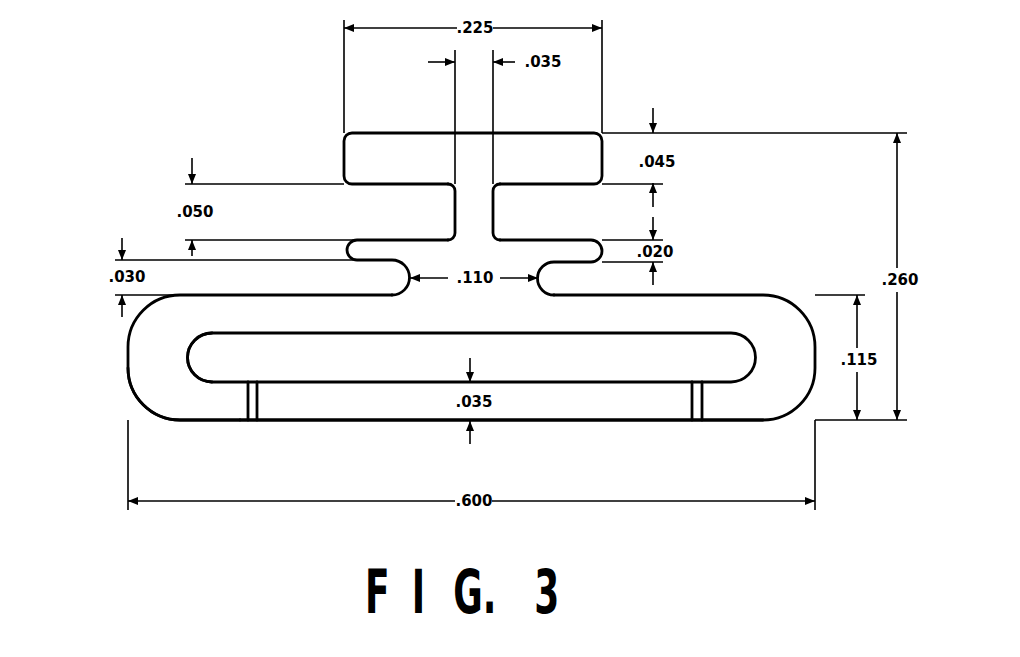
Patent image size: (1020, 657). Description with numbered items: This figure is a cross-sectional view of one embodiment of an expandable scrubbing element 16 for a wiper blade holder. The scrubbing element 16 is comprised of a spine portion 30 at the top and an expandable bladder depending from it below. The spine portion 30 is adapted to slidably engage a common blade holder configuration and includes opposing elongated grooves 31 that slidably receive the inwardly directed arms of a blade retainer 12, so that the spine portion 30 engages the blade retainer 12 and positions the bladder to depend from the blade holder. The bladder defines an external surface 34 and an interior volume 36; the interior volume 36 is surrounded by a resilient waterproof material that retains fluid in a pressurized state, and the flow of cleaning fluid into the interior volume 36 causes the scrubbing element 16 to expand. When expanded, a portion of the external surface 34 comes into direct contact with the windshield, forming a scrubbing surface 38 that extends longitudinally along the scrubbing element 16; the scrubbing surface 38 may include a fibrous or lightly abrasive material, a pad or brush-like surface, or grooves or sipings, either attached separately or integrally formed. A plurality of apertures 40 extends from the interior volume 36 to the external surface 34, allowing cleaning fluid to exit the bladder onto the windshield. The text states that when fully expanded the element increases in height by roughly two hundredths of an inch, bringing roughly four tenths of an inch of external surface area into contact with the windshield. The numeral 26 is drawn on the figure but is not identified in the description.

The first blade retainer 12 is at (745, 292).
The expandable scrubbing element 16 is at (606, 124).
The slot 26 is at (412, 352).
The spine portion 30 is at (497, 214).
The opposing elongated grooves 31 is at (360, 236).
The external surface 34 is at (367, 424).
The interior volume 36 is at (210, 355).
The scrubbing surface 38 is at (228, 423).
The apertures 40 is at (272, 413).